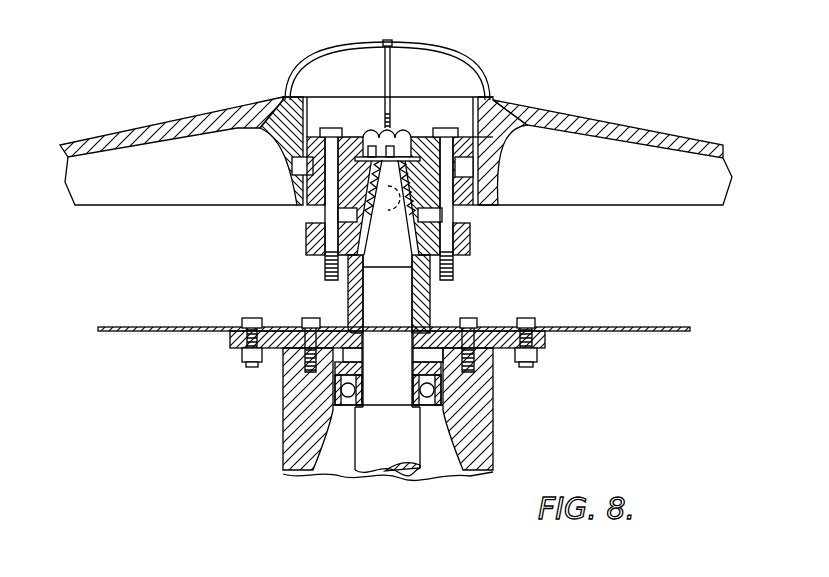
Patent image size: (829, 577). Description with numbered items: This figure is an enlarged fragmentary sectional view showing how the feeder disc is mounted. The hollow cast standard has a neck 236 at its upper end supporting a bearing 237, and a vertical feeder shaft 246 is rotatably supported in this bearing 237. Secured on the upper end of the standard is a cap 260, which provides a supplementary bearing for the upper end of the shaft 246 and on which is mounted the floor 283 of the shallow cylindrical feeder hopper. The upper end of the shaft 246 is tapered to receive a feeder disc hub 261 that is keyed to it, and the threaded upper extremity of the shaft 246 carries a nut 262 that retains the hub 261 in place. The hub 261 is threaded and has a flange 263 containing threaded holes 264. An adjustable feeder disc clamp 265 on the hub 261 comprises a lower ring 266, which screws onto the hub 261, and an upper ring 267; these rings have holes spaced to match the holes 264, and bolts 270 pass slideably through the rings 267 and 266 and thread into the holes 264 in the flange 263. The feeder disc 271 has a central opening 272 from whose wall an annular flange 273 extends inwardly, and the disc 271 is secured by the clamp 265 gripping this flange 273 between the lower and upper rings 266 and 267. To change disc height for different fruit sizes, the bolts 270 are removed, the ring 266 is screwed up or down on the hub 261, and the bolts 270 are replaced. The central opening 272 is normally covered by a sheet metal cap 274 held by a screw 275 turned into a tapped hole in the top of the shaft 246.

The neck 236 is at (483, 409).
The bearing 237 is at (440, 389).
The vertical feeder shaft 246 is at (377, 289).
The cap 260 is at (452, 330).
The feeder disc hub 261 is at (478, 240).
The nut 262 is at (403, 137).
The flange 263 is at (306, 241).
The threaded holes 264 is at (462, 232).
The adjustable feeder disc clamp 265 is at (497, 163).
The lower ring 266 is at (487, 190).
The ring 267 is at (490, 142).
The bolts 270 is at (332, 121).
The feeder disc 271 is at (598, 127).
The central opening 272 is at (472, 103).
The annular flange 273 is at (302, 167).
The sheet metal cap 274 is at (432, 68).
The screw 275 is at (384, 70).
The floor 283 is at (614, 332).